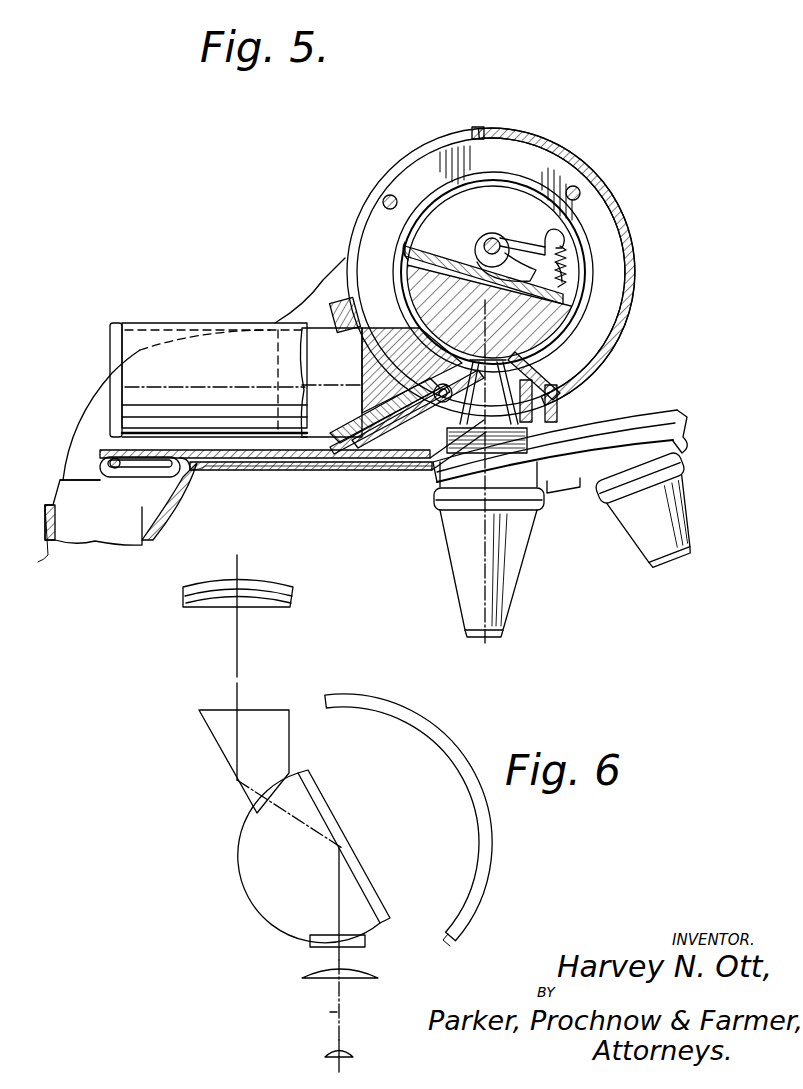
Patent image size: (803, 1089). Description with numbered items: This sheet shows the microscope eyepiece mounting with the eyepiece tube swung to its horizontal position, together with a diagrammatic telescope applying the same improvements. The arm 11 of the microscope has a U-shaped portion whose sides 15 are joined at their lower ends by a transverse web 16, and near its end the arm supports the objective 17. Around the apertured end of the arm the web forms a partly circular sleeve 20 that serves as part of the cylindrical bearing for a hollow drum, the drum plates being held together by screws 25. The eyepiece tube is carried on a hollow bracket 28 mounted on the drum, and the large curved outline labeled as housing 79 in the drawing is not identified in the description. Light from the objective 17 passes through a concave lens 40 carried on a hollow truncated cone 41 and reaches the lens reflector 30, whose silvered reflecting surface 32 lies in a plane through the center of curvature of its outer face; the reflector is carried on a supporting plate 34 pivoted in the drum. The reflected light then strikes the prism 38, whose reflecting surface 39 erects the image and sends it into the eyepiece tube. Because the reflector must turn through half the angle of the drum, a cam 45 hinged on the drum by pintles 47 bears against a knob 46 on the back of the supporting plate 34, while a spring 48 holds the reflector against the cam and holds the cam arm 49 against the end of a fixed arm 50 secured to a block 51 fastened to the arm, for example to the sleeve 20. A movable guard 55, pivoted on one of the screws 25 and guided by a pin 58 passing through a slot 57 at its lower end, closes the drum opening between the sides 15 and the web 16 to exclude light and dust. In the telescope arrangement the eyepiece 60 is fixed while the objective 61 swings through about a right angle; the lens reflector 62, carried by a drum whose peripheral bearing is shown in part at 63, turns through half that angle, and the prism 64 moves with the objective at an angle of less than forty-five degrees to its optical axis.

In FIG. 5, the arm 11 is at (83, 473).
In FIG. 5, the sides 15 is at (307, 312).
In FIG. 5, the transverse web 16 is at (304, 472).
In FIG. 5, the objective 17 is at (630, 520).
In FIG. 5, the sleeve 20 is at (610, 228).
In FIG. 5, the screws 25 is at (385, 198).
In FIG. 5, the bracket 28 is at (345, 302).
In FIG. 5, the lens reflector 30 is at (545, 322).
In FIG. 5, the reflecting surface 32 is at (415, 256).
In FIG. 5, the supporting plate 34 is at (430, 262).
In FIG. 5, the prism 38 is at (385, 352).
In FIG. 5, the reflecting surface 39 is at (430, 380).
In FIG. 5, the concave lens 40 is at (560, 398).
In FIG. 5, the hollow truncated cone 41 is at (556, 416).
In FIG. 5, the cam 45 is at (570, 254).
In FIG. 5, the knob 46 is at (530, 270).
In FIG. 5, the hinge pintles 47 is at (493, 238).
In FIG. 5, the spring 48 is at (567, 270).
In FIG. 5, the arm 49 is at (520, 242).
In FIG. 5, the fixed arm 50 is at (560, 232).
In FIG. 5, the block 51 is at (548, 358).
In FIG. 5, the guard 55 is at (275, 466).
In FIG. 5, the slot 57 is at (148, 468).
In FIG. 5, the pin 58 is at (97, 481).
In FIG. 6, the eyepiece 60 is at (330, 1012).
In FIG. 6, the objective 61 is at (300, 575).
In FIG. 6, the lens reflector 62 is at (255, 860).
In FIG. 6, the peripheral bearing 63 is at (490, 867).
In FIG. 6, the prism 64 is at (217, 733).
In FIG. 5, the dome housing 79 is at (198, 322).